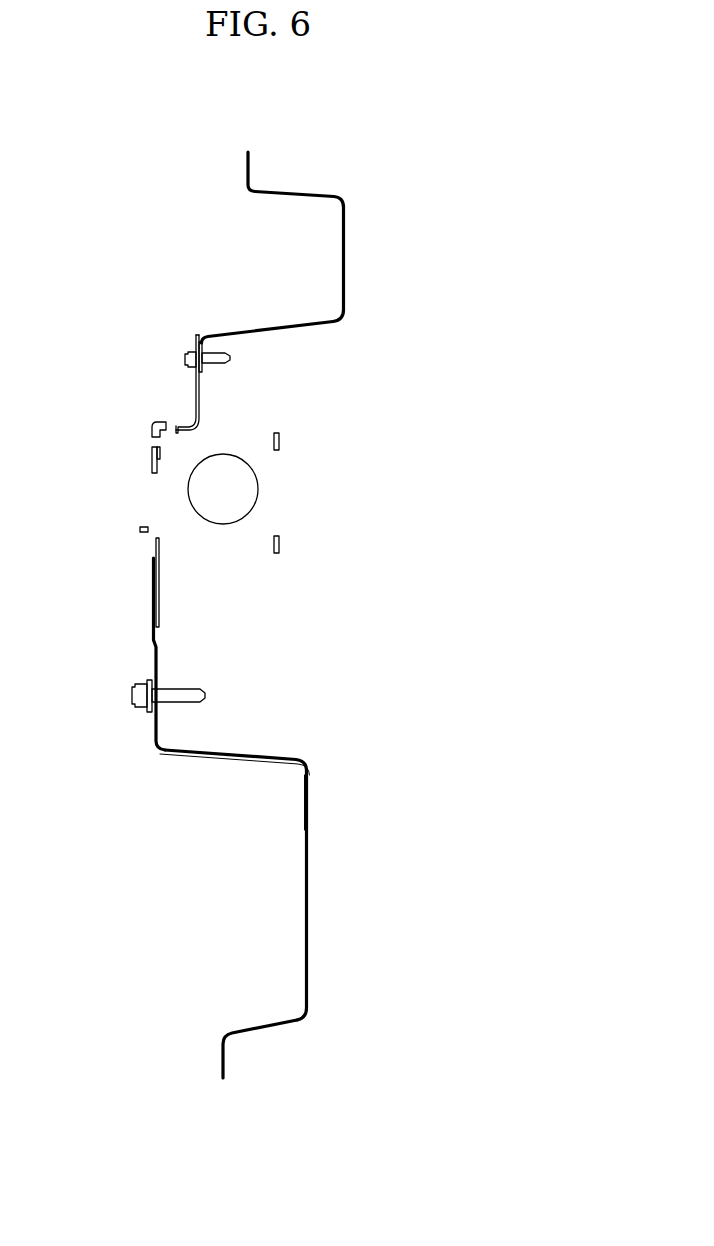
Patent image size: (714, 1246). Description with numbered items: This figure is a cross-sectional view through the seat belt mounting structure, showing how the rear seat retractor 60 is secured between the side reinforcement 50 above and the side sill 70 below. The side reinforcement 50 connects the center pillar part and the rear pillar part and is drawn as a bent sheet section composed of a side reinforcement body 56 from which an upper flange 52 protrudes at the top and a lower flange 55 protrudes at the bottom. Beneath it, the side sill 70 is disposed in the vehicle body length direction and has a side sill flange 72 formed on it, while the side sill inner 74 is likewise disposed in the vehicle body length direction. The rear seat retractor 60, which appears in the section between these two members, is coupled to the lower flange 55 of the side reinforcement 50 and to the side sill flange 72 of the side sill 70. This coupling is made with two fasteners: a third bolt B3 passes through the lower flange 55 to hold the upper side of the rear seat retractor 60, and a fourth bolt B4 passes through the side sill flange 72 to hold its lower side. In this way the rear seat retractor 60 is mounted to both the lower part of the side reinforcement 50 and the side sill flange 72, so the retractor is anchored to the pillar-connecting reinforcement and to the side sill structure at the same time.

The side reinforcement 50 is at (328, 234).
The upper flange 52 is at (252, 167).
The side reinforcement body 56 is at (347, 290).
The lower flange 55 is at (204, 345).
The third bolt B3 is at (185, 355).
The rear seat retractor 60 is at (357, 491).
The fourth bolt B4 is at (132, 695).
The side sill 70 is at (280, 808).
The side sill flange 72 is at (159, 745).
The side sill inner 74 is at (309, 868).